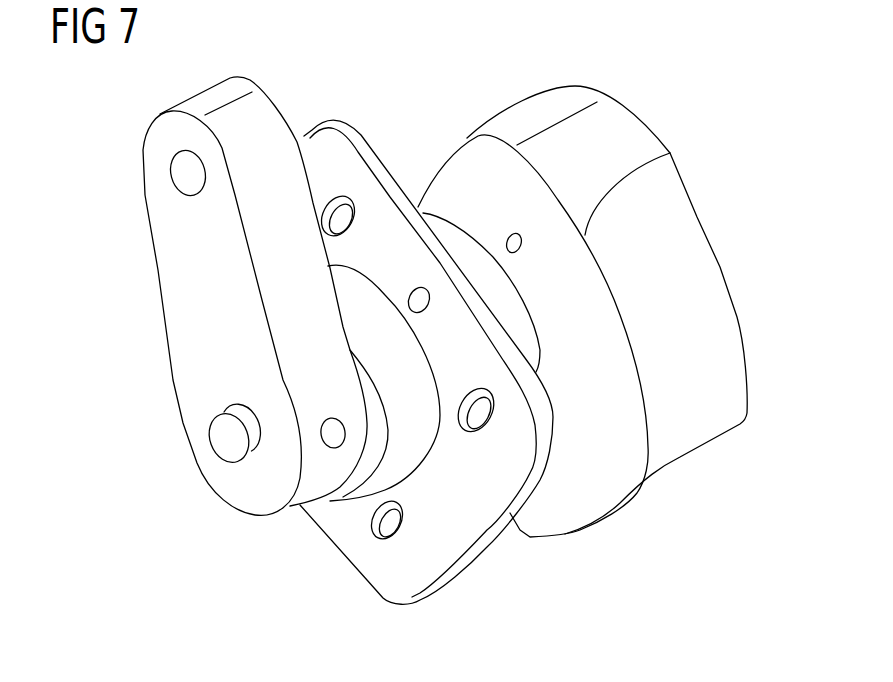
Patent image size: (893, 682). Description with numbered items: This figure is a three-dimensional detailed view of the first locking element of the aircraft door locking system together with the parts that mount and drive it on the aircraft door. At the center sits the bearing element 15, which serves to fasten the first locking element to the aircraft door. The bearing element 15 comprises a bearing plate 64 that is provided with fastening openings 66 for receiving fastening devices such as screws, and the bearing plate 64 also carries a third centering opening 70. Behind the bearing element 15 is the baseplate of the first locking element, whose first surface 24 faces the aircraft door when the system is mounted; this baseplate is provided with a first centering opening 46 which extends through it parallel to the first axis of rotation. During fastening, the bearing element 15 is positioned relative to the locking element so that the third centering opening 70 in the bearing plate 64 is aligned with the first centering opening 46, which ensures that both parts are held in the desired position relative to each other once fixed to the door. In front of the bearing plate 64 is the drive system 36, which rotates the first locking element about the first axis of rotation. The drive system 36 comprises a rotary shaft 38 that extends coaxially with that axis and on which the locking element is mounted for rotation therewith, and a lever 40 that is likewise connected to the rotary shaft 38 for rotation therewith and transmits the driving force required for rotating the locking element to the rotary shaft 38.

The bearing element 15 is at (373, 120).
The first surface 24 is at (469, 153).
The drive system 36 is at (122, 423).
The rotary shaft 38 is at (230, 437).
The lever 40 is at (163, 303).
The first centering opening 46 is at (523, 250).
The bearing plate 64 is at (373, 567).
The fastening openings 66 is at (333, 212).
The third centering opening 70 is at (417, 297).